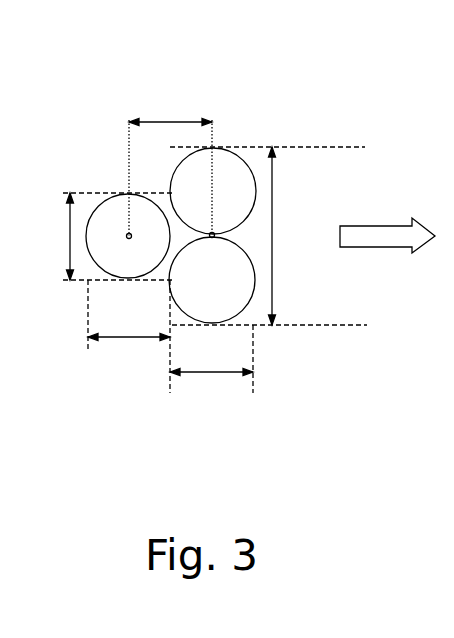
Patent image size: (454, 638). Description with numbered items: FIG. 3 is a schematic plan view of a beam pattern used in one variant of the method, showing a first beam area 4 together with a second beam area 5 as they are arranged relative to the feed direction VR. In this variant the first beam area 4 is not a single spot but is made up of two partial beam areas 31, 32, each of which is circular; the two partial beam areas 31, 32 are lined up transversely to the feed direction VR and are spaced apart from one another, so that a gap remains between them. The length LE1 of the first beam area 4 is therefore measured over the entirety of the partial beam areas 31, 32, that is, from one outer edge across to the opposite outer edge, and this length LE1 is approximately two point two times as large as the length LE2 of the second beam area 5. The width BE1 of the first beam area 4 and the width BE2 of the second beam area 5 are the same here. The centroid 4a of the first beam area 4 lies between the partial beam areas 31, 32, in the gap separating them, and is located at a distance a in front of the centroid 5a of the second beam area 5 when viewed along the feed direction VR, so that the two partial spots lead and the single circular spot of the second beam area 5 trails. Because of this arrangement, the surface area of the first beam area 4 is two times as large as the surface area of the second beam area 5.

The first beam area 4 is at (253, 203).
The centroid of the first beam area 4a is at (212, 237).
The second beam area 5 is at (115, 215).
The centroid of the second beam area 5a is at (131, 233).
The partial beam area 31 is at (221, 162).
The partial beam area 32 is at (235, 300).
The feed direction VR is at (395, 235).
The distance a is at (170, 111).
The length of the first beam area LE1 is at (290, 236).
The length of the second beam area LE2 is at (55, 236).
The width of the first beam area BE1 is at (211, 385).
The width of the second beam area BE2 is at (129, 351).